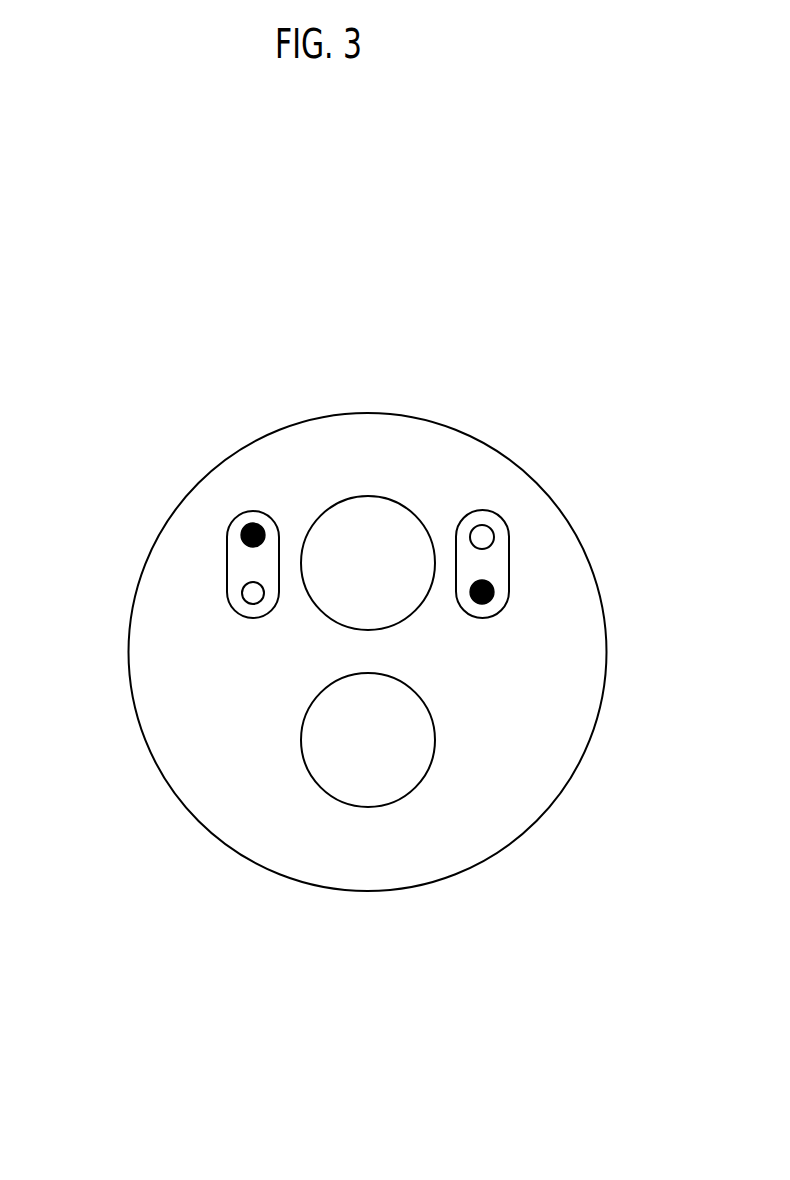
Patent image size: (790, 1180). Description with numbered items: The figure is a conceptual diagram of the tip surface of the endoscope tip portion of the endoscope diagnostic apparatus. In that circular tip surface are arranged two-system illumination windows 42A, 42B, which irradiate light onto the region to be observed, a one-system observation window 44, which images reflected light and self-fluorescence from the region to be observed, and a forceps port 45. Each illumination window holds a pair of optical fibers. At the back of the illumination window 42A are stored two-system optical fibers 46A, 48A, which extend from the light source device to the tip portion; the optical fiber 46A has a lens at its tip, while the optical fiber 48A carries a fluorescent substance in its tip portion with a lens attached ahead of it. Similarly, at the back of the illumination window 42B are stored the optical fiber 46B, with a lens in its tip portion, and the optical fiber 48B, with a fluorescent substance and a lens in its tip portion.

The observation window 44 is at (363, 495).
The forceps port 45 is at (375, 808).
The illumination window 42A is at (509, 562).
The illumination window 42B is at (227, 562).
The optical fiber 46A is at (482, 528).
The optical fiber 46B is at (253, 600).
The optical fiber 48A is at (482, 604).
The optical fiber 48B is at (253, 517).